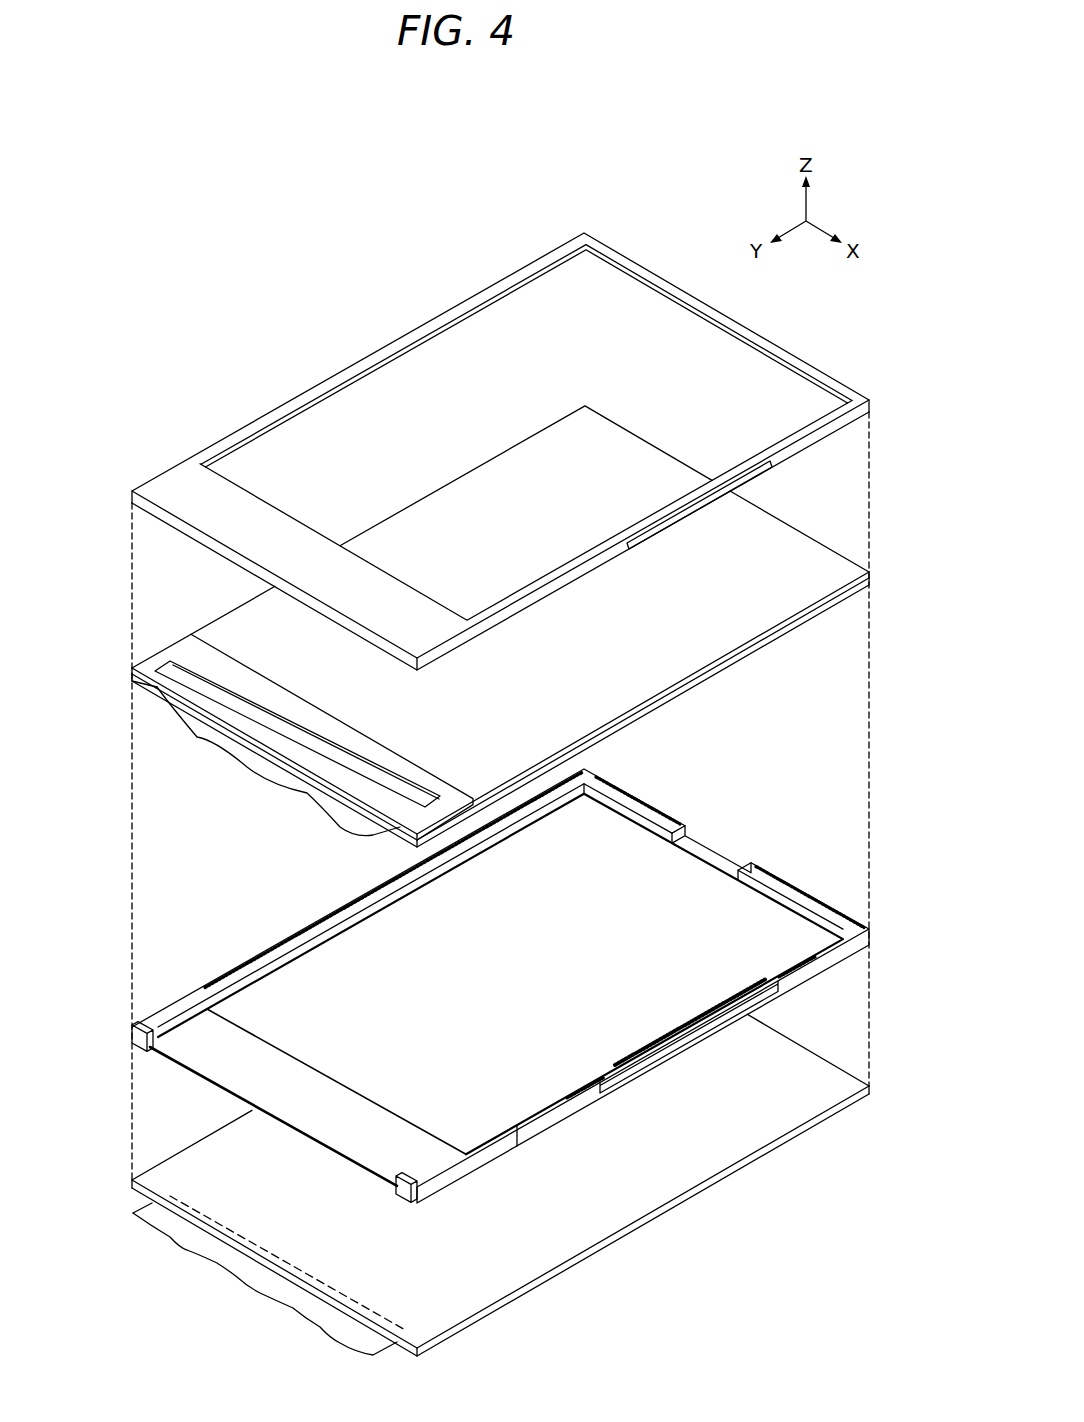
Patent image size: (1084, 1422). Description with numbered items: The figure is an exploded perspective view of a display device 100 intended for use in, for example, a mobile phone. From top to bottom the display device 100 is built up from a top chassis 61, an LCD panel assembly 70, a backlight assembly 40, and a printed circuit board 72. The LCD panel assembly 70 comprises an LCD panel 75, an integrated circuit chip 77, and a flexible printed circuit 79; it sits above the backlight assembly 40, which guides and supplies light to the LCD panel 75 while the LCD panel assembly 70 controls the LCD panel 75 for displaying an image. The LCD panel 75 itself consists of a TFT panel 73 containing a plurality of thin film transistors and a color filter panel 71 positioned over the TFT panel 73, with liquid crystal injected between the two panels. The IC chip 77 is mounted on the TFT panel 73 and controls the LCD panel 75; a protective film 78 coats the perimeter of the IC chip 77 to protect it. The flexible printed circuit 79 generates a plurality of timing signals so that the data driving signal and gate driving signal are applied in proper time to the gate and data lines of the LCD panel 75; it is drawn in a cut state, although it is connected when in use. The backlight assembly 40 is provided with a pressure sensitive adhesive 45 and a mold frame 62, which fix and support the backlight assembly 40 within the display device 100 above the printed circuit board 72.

The display device 100 is at (457, 236).
The top chassis 61 is at (511, 451).
The LCD panel 75 is at (509, 469).
The LCD panel assembly 70 is at (493, 669).
The color filter panel 71 is at (869, 573).
The TFT panel 73 is at (869, 582).
The protective film 78 is at (196, 648).
The integrated circuit chip 77 is at (222, 683).
The flexible printed circuit 79 is at (258, 773).
The backlight assembly 40 is at (500, 986).
The mold frame 62 is at (332, 917).
The pressure sensitive adhesive 45 is at (243, 1086).
The printed circuit board 72 is at (795, 1117).